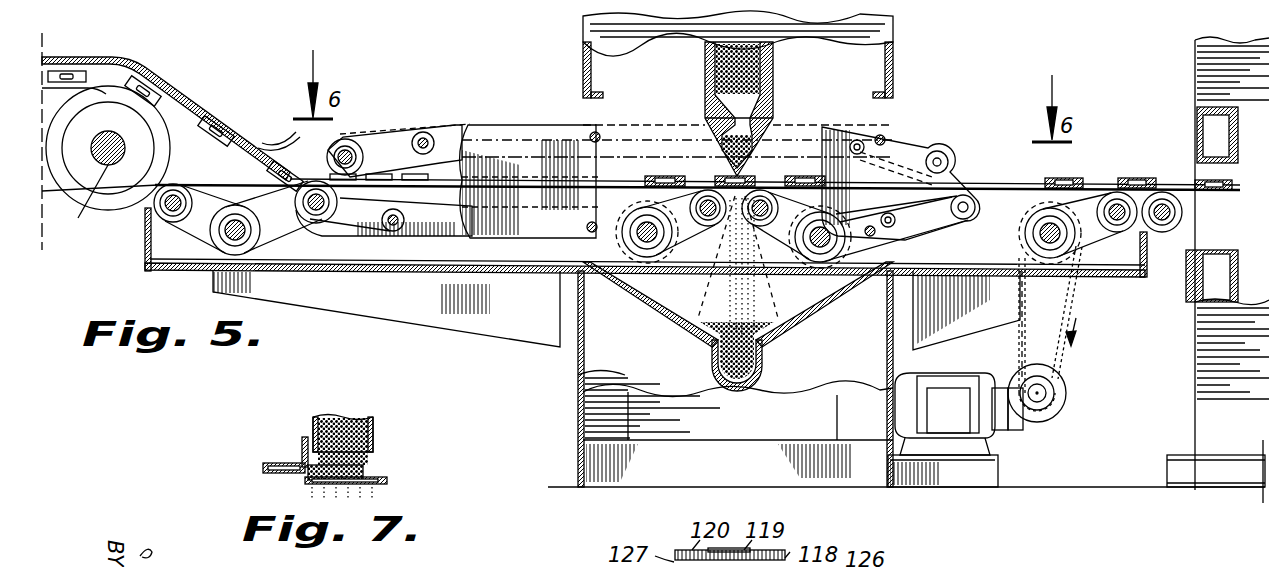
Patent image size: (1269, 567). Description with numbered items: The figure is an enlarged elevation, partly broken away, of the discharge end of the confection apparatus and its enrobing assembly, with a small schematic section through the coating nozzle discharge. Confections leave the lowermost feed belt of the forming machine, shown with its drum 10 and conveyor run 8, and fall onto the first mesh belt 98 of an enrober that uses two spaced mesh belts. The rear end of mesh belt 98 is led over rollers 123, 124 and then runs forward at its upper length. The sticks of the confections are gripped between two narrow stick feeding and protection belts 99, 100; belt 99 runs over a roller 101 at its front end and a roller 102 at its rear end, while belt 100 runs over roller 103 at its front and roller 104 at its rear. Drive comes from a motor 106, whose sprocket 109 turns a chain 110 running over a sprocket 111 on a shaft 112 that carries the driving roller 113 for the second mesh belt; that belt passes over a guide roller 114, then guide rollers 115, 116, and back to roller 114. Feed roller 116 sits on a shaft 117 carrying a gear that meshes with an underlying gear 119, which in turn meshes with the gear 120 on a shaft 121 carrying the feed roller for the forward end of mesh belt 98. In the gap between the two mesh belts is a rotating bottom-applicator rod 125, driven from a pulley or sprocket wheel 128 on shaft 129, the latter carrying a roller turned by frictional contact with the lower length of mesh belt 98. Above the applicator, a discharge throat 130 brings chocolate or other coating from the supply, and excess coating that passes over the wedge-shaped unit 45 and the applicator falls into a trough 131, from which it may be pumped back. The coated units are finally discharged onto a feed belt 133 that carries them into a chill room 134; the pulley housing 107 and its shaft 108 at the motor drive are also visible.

In FIG. 5, the conveyor 8 is at (86, 208).
In FIG. 5, the drum 10 is at (108, 148).
In FIG. 5, the wedge-shaped confection 45 is at (1213, 180).
In FIG. 7, the wedge-shaped confection 45 is at (365, 470).
In FIG. 5, the first mesh belt 98 is at (216, 190).
In FIG. 7, the first mesh belt 98 is at (385, 482).
In FIG. 5, the stick feeding and protection belt 99 is at (366, 140).
In FIG. 7, the stick feeding and protection belt 99 is at (300, 460).
In FIG. 5, the stick feeding and protection belt 100 is at (375, 233).
In FIG. 7, the stick feeding and protection belt 100 is at (290, 476).
In FIG. 5, the roller 101 is at (332, 152).
In FIG. 5, the roller 102 is at (932, 152).
In FIG. 5, the roller 103 is at (312, 224).
In FIG. 5, the roller 104 is at (975, 207).
In FIG. 5, the motor 106 is at (948, 430).
In FIG. 5, the gear housing 107 is at (1028, 425).
In FIG. 5, the shaft 108 is at (1046, 393).
In FIG. 5, the sprocket 109 is at (1056, 378).
In FIG. 5, the chain 110 is at (1062, 355).
In FIG. 5, the sprocket 111 is at (1130, 159).
In FIG. 5, the shaft 112 is at (1040, 250).
In FIG. 5, the driving roller 113 is at (1100, 232).
In FIG. 5, the guide roller 114 is at (1146, 270).
In FIG. 5, the guide roller 115 is at (842, 250).
In FIG. 5, the feed roller 116 is at (795, 245).
In FIG. 5, the shaft 117 is at (758, 230).
In FIG. 5, the gear 119 is at (722, 245).
In FIG. 5, the gear 120 is at (677, 144).
In FIG. 5, the shaft 121 is at (700, 222).
In FIG. 5, the roller 123 is at (232, 240).
In FIG. 5, the roller 124 is at (168, 215).
In FIG. 5, the bottom-applicator rod 125 is at (758, 188).
In FIG. 5, the pulley or sprocket wheel 128 is at (386, 309).
In FIG. 5, the shaft 129 is at (620, 240).
In FIG. 5, the discharge throat 130 is at (772, 122).
In FIG. 7, the discharge throat 130 is at (374, 441).
In FIG. 5, the trough 131 is at (727, 122).
In FIG. 5, the feed belt 133 is at (1183, 210).
In FIG. 5, the chill room 134 is at (1218, 270).